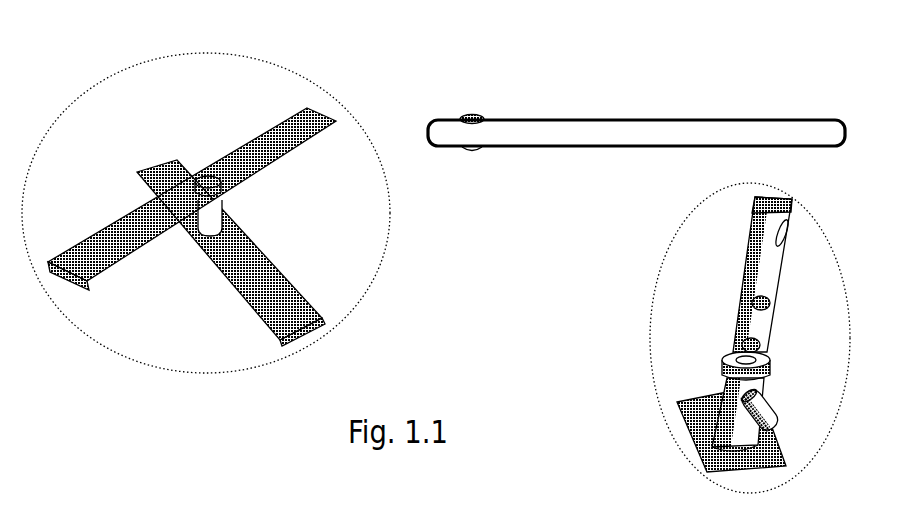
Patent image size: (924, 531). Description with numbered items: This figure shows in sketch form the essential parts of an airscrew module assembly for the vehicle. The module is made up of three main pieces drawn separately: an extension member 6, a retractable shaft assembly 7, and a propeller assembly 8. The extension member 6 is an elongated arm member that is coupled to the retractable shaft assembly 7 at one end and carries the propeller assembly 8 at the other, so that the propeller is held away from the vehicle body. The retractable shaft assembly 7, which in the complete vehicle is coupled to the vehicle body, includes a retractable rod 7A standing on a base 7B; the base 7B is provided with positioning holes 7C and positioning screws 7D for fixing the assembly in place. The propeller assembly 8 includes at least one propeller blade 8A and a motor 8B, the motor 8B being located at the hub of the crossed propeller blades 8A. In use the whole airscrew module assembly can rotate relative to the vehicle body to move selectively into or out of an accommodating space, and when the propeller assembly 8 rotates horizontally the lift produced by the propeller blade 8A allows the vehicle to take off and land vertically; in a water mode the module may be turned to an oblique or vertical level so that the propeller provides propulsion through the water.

The extension member 6 is at (605, 149).
The retractable shaft assembly 7 is at (715, 338).
The retractable rod 7A is at (738, 324).
The base 7B is at (683, 434).
The positioning holes 7C is at (780, 297).
The positioning screws 7D is at (774, 414).
The propeller assembly 8 is at (206, 246).
The propeller blade 8A is at (192, 211).
The motor 8B is at (224, 213).